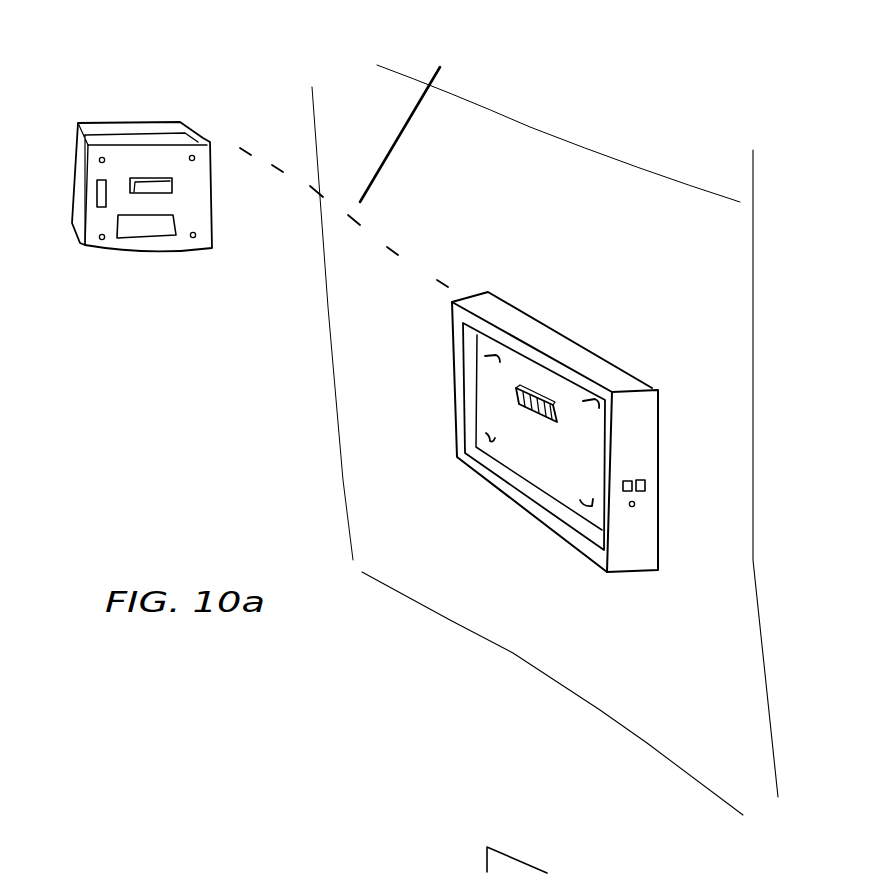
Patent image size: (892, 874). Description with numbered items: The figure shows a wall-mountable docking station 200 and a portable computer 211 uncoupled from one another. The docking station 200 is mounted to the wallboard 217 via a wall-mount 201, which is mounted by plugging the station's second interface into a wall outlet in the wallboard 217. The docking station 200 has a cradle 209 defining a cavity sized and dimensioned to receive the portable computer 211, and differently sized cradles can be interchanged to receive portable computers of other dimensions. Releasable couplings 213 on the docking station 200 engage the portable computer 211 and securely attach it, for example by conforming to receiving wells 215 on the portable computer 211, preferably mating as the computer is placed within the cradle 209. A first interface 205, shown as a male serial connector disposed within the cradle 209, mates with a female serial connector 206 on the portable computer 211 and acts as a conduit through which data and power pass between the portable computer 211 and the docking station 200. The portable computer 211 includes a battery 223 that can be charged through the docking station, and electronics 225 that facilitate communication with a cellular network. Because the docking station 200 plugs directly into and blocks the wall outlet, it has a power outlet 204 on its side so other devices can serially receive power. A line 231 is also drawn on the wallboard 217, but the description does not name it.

The wall-mountable docking station 200 is at (628, 340).
The wall-mount 201 is at (648, 527).
The power outlet 204 is at (650, 483).
The first interface 205 is at (535, 388).
The female serial connector 206 is at (170, 188).
The cradle 209 is at (585, 449).
The portable computer 211 is at (203, 101).
The releasable couplings 213 is at (482, 436).
The receiving wells 215 is at (103, 150).
The wallboard 217 is at (575, 175).
The battery 223 is at (153, 228).
The electronics 225 is at (99, 187).
The wall stud line 231 is at (428, 113).